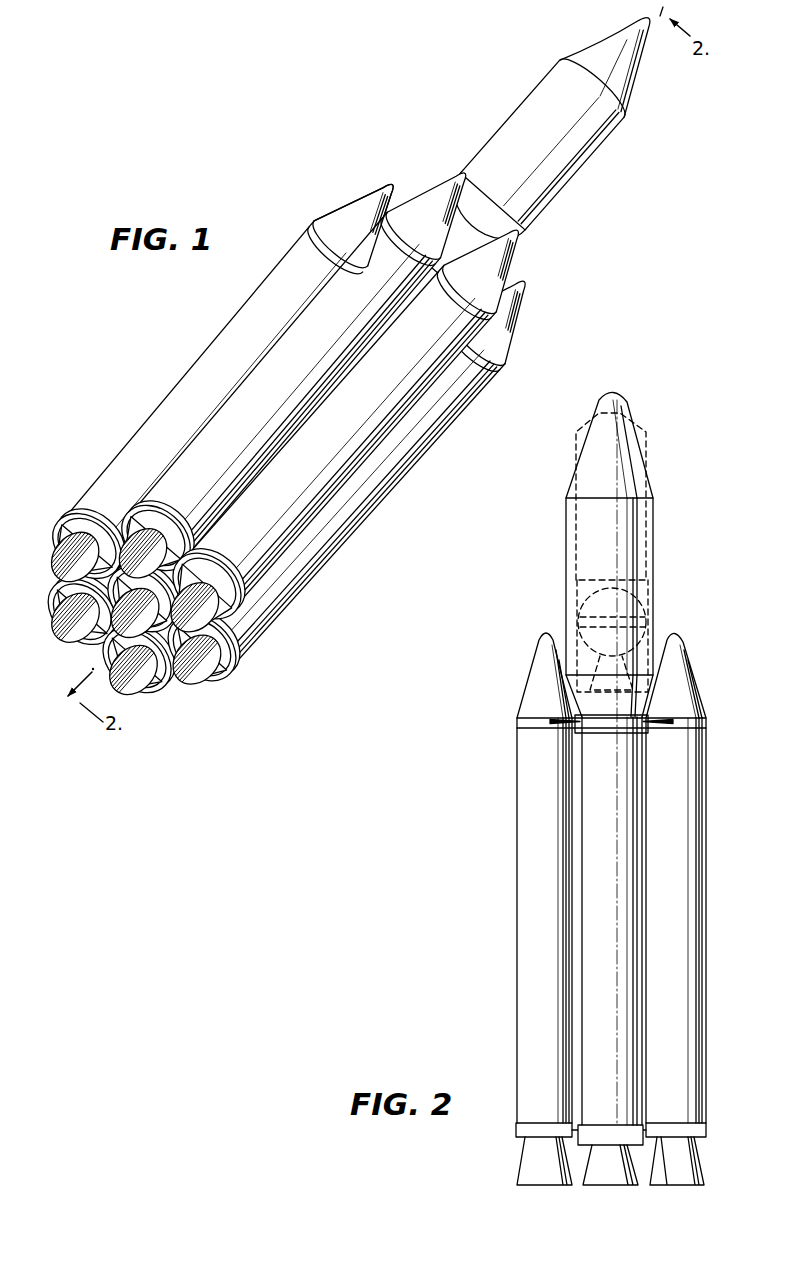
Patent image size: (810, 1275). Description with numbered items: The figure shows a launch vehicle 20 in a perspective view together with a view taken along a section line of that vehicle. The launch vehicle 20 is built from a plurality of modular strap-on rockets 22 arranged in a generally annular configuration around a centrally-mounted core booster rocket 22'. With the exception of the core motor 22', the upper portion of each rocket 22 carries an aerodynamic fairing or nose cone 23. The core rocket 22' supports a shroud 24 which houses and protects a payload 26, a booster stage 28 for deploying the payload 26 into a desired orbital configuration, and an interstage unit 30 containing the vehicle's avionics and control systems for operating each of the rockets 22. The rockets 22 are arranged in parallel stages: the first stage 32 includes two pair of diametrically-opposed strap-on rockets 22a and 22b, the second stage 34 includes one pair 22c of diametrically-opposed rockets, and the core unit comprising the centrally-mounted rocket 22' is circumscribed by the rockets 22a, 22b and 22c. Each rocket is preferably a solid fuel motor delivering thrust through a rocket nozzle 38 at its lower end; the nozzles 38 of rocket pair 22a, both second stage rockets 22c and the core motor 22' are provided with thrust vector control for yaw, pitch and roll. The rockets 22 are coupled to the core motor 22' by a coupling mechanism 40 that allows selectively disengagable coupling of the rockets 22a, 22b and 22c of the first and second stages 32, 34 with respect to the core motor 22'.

In FIG. 1, the launch vehicle 20 is at (368, 157).
In FIG. 2, the launch vehicle 20 is at (720, 602).
In FIG. 1, the strap-on rockets 22 is at (170, 335).
In FIG. 1, the first stage strap-on rocket pair 22a is at (252, 431).
In FIG. 1, the first stage strap-on rocket pair 22b is at (310, 483).
In FIG. 1, the second stage rocket pair 22c is at (160, 420).
In FIG. 2, the second stage rocket pair 22c is at (522, 836).
In FIG. 2, the core booster rocket 22' is at (563, 951).
In FIG. 1, the aerodynamic fairing (nose cone) 23 is at (345, 212).
In FIG. 1, the shroud 24 is at (512, 118).
In FIG. 2, the shroud 24 is at (566, 520).
In FIG. 2, the payload 26 is at (627, 470).
In FIG. 2, the booster stage 28 is at (582, 606).
In FIG. 2, the interstage unit 30 is at (556, 705).
In FIG. 1, the first stage 32 is at (130, 752).
In FIG. 1, the second stage 34 is at (400, 184).
In FIG. 1, the rocket nozzle 38 is at (200, 672).
In FIG. 2, the coupling mechanism 40 is at (568, 733).